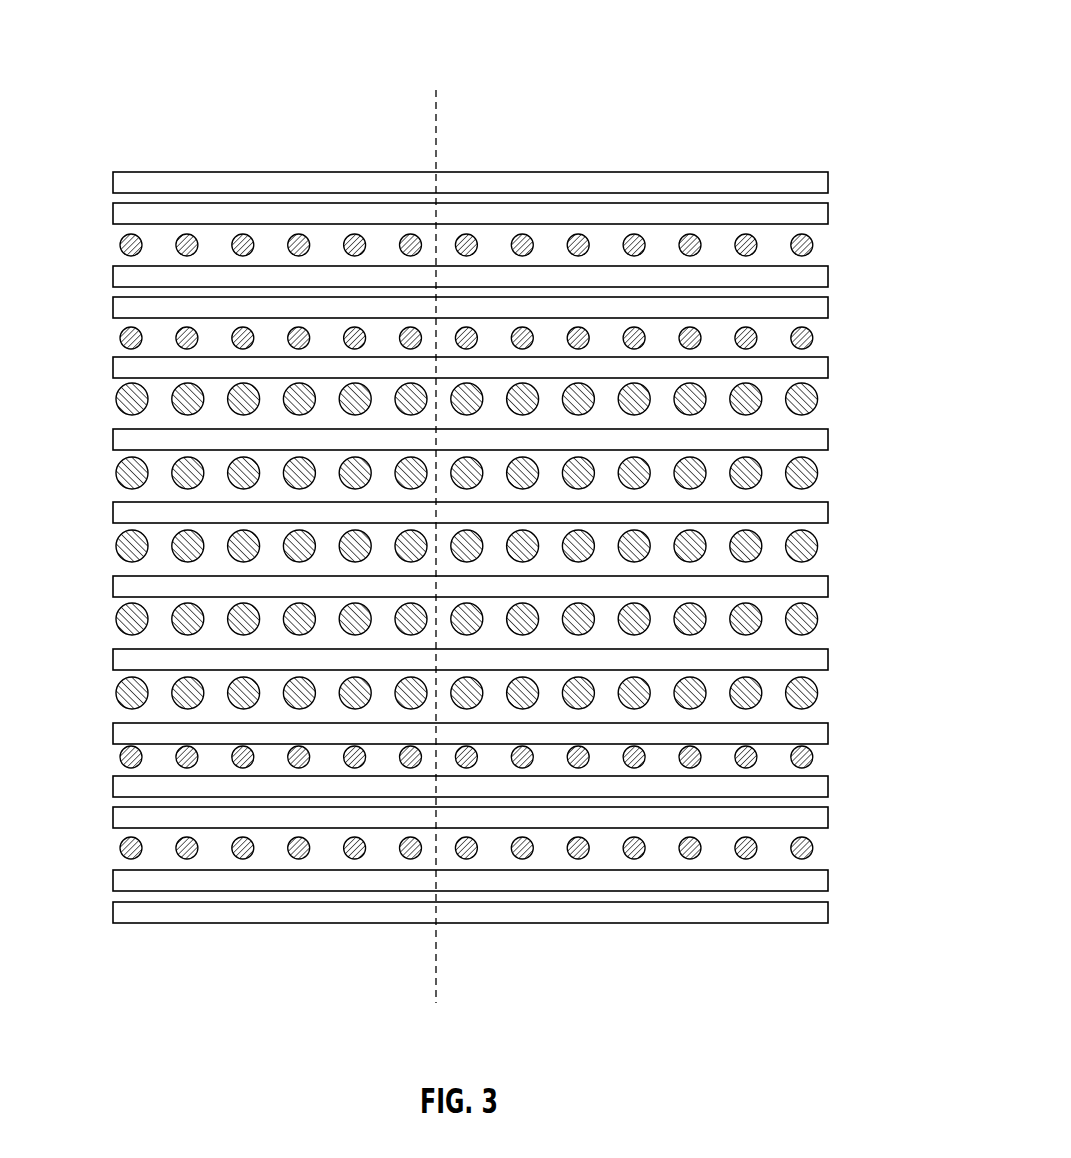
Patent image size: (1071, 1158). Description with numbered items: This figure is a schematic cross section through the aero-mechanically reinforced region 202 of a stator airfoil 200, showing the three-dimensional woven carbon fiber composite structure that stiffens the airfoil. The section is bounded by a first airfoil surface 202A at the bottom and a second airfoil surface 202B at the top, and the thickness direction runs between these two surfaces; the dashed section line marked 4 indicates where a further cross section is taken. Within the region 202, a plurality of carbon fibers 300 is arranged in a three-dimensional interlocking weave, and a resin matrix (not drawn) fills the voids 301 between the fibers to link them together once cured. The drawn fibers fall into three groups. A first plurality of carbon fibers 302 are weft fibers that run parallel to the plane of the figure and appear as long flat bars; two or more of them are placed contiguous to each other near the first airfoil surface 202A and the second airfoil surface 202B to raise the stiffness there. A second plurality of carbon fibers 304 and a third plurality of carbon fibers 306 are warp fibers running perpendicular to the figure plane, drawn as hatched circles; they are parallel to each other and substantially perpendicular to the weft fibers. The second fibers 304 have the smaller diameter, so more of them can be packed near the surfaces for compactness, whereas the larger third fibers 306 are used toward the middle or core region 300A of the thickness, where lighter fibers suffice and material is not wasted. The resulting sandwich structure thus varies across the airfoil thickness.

The stator airfoil 200 is at (663, 27).
The aero-mechanically reinforced region 202 is at (818, 130).
The first airfoil surface 202A is at (663, 930).
The second airfoil surface 202B is at (613, 161).
The voids 301 is at (820, 195).
The first plurality of carbon fibers 302 is at (110, 176).
The second plurality of carbon fibers 304 is at (111, 244).
The third plurality of carbon fibers 306 is at (111, 401).
The plurality of carbon fibers 300 is at (827, 398).
The core region 300A is at (828, 544).
The section line 4- 4 is at (436, 90).